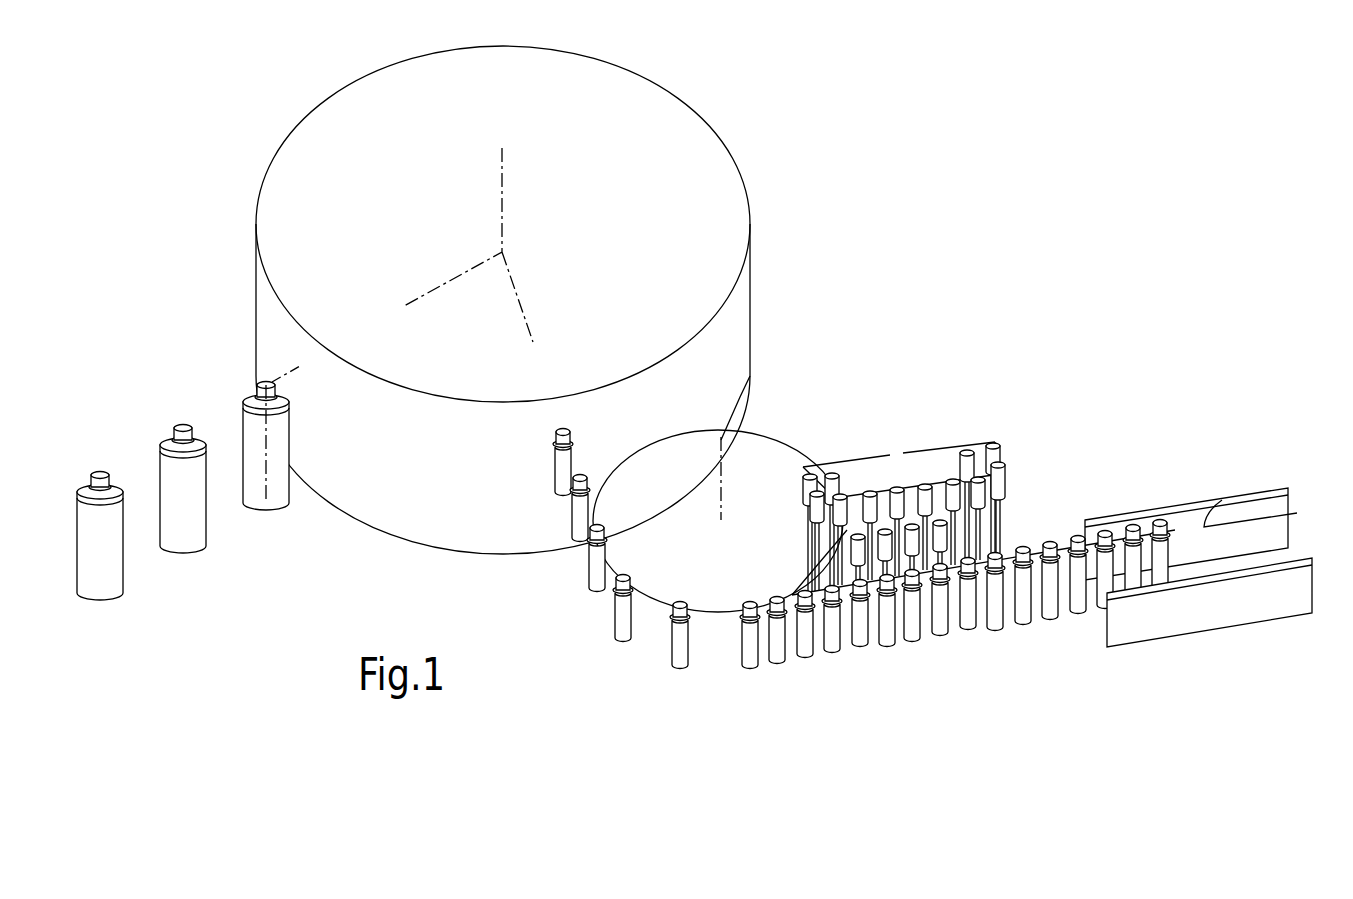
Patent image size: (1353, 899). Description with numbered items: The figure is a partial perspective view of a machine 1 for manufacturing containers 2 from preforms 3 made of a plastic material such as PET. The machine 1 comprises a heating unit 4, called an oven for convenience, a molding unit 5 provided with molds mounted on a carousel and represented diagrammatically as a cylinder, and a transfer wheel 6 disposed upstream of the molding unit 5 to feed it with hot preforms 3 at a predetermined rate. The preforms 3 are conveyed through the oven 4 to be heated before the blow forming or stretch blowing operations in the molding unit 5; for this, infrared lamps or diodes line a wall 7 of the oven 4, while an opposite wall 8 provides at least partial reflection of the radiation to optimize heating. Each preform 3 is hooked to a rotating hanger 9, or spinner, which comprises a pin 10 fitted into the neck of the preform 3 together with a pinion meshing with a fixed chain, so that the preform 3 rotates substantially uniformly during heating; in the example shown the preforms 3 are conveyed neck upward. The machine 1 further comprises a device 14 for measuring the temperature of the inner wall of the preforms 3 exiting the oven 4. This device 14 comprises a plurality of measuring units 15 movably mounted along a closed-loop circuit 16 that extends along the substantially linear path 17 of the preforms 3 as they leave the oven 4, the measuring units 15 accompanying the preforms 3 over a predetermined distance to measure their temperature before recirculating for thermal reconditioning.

The machine 1 is at (897, 288).
The containers 2 is at (115, 572).
The preforms 3 is at (773, 653).
The heating unit 4 is at (1268, 486).
The molding unit 5 is at (657, 108).
The transfer wheel 6 is at (775, 448).
The wall 7 is at (1270, 605).
The opposite wall 8 is at (1285, 507).
The rotating hanger 9 is at (1045, 542).
The pin 10 is at (1076, 534).
The device 14 is at (962, 428).
The measuring units 15 is at (1012, 472).
The closed-loop circuit 16 is at (873, 458).
The path 17 is at (1221, 506).